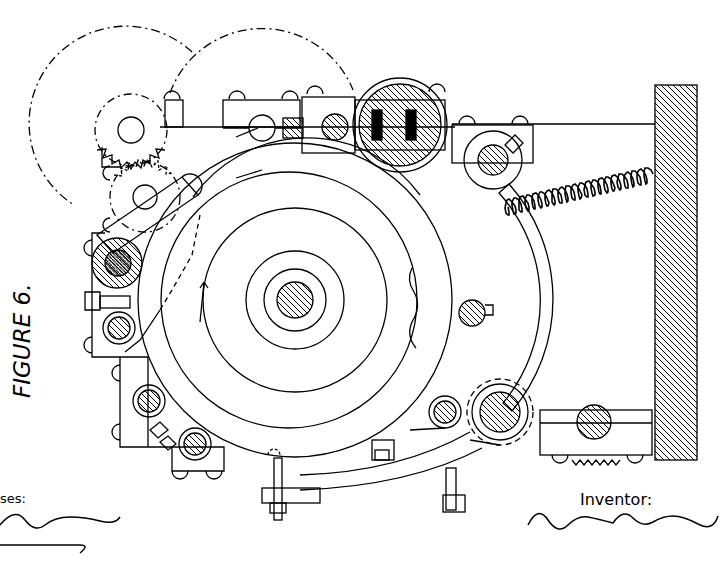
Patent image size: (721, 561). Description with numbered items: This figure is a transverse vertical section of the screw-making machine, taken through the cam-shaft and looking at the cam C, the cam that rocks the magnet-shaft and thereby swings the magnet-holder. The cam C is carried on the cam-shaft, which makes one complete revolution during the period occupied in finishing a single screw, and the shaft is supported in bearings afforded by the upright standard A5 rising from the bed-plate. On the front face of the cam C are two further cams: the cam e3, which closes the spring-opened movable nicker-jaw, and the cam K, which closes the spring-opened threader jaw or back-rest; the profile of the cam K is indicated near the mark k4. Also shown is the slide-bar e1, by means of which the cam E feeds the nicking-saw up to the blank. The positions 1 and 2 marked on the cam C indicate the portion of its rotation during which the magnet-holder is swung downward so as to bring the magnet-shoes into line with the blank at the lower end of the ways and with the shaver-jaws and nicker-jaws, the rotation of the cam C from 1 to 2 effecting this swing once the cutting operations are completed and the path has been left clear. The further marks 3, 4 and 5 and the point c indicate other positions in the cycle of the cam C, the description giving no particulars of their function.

The cam position mark 1 is at (248, 165).
The cam position mark 2 is at (248, 175).
The lever arm 3 is at (149, 213).
The cam ring 4 is at (222, 232).
The connecting link 5 is at (166, 283).
The cam for rocking the magnet-shaft C is at (306, 167).
The cam K is at (295, 300).
The cam e3 is at (295, 287).
The cam notch k4 is at (413, 308).
The slide-bar e1 is at (476, 305).
The upright standard A5 is at (390, 281).
The roller c is at (149, 376).